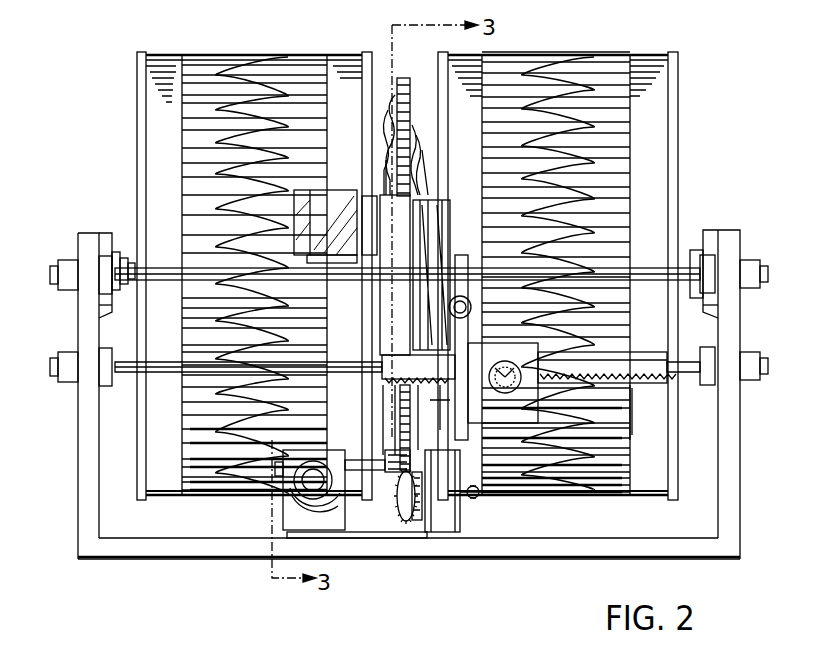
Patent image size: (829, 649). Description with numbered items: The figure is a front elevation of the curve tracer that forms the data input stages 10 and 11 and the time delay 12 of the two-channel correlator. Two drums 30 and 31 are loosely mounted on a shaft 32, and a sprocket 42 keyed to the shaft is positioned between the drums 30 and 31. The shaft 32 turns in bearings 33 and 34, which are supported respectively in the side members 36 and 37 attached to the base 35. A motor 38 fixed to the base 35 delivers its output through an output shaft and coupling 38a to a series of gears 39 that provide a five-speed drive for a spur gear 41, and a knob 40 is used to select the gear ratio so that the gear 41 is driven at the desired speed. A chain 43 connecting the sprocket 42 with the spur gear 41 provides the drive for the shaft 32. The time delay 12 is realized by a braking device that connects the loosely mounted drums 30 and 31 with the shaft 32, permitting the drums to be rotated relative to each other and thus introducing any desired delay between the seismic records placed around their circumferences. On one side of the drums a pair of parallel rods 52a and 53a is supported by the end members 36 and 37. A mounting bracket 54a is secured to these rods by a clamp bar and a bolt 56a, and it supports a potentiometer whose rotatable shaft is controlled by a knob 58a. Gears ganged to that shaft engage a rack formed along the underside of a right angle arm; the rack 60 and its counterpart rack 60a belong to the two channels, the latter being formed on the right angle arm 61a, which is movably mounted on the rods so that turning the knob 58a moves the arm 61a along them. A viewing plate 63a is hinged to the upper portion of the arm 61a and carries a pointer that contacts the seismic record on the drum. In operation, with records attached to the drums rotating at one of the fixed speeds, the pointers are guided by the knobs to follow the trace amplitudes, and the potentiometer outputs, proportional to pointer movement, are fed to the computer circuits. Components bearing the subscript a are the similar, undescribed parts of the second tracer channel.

The data input stage 10 is at (279, 161).
The data input stage 11 is at (660, 160).
The time delay 12 is at (400, 410).
The drum 30 is at (254, 256).
The drum 31 is at (558, 259).
The shaft 32 is at (117, 250).
The bearing 33 is at (105, 238).
The bearing 34 is at (712, 235).
The base 35 is at (178, 553).
The side member 36 is at (88, 432).
The side member 37 is at (732, 447).
The motor 38 is at (290, 503).
The output shaft and coupling 38a is at (380, 458).
The series of gears 39 is at (445, 515).
The knob 40 is at (478, 498).
The spur gear 41 is at (400, 510).
The sprocket 42 is at (410, 95).
The chain 43 is at (395, 80).
The parallel rod 52a is at (70, 270).
The parallel rod 53a is at (62, 358).
The mounting bracket 54a is at (456, 358).
The bolt 56a is at (471, 307).
The knob 58a is at (503, 393).
The rack 60 is at (618, 360).
The rack 60a is at (632, 400).
The right angle arm 61a is at (380, 300).
The viewing plate 63a is at (300, 222).